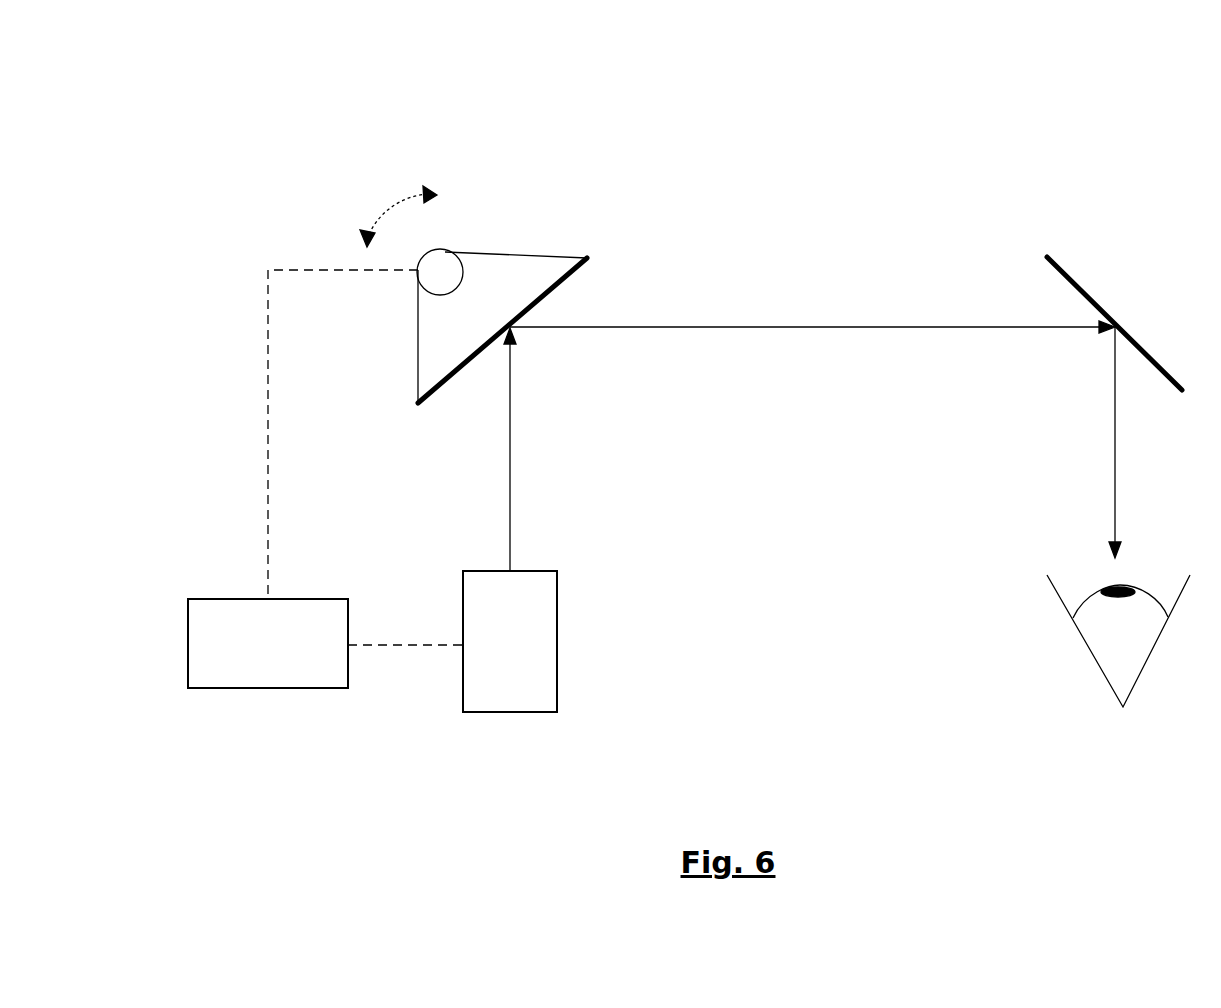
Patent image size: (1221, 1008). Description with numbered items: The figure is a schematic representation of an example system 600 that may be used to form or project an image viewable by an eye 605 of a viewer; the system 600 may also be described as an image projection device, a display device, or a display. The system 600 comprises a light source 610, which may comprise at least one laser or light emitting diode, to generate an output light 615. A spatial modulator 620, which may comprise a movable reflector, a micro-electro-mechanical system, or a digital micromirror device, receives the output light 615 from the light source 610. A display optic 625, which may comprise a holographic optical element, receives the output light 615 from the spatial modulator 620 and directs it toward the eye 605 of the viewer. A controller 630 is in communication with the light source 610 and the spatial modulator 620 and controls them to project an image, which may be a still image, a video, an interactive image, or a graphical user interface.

The system 600 is at (313, 108).
The eye 605 is at (1088, 645).
The light source 610 is at (510, 641).
The output light 615 is at (510, 477).
The spatial modulator 620 is at (522, 252).
The display optic 625 is at (1080, 283).
The controller 630 is at (325, 479).